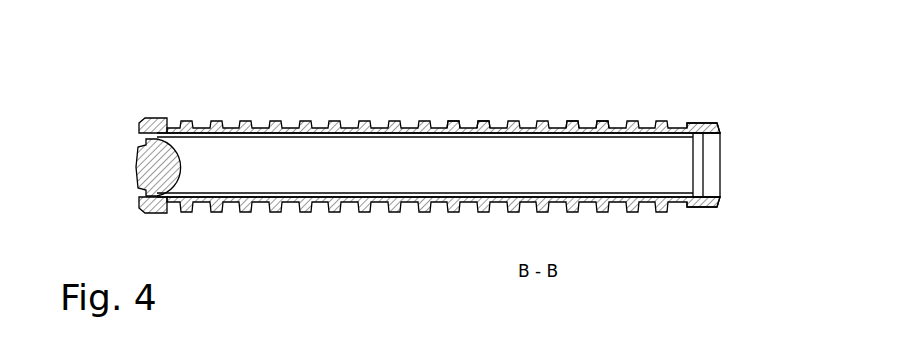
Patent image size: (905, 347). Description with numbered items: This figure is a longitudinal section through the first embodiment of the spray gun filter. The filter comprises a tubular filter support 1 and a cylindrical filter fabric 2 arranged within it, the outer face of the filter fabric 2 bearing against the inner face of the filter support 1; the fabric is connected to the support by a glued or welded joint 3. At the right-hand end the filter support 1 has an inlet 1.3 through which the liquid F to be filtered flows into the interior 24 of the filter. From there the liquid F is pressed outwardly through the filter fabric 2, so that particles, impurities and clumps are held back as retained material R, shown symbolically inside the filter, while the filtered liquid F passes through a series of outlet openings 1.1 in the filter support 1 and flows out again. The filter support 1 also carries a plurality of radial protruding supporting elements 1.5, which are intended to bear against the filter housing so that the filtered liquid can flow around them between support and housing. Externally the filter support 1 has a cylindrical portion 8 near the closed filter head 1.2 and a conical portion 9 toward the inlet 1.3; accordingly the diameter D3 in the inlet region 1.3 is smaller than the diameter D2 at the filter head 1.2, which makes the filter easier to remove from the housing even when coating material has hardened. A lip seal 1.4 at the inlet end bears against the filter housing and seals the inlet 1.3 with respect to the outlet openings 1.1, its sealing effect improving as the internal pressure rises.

The filter support 1 is at (377, 120).
The outlet openings 1.1 is at (497, 120).
The filter head 1.2 is at (136, 118).
The inlet 1.3 is at (700, 123).
The seal 1.4 is at (716, 209).
The radial protruding supporting elements 1.5 is at (602, 120).
The filter fabric 2 is at (600, 148).
The glued or welded joint 3 is at (704, 193).
The interior 24 is at (490, 172).
The cylindrical portion 8 is at (293, 35).
The conical portion 9 is at (705, 35).
The diameter at the filter head D2 is at (135, 120).
The diameter in the inlet region D3 is at (723, 123).
The liquid F is at (247, 157).
The retained material R is at (240, 183).